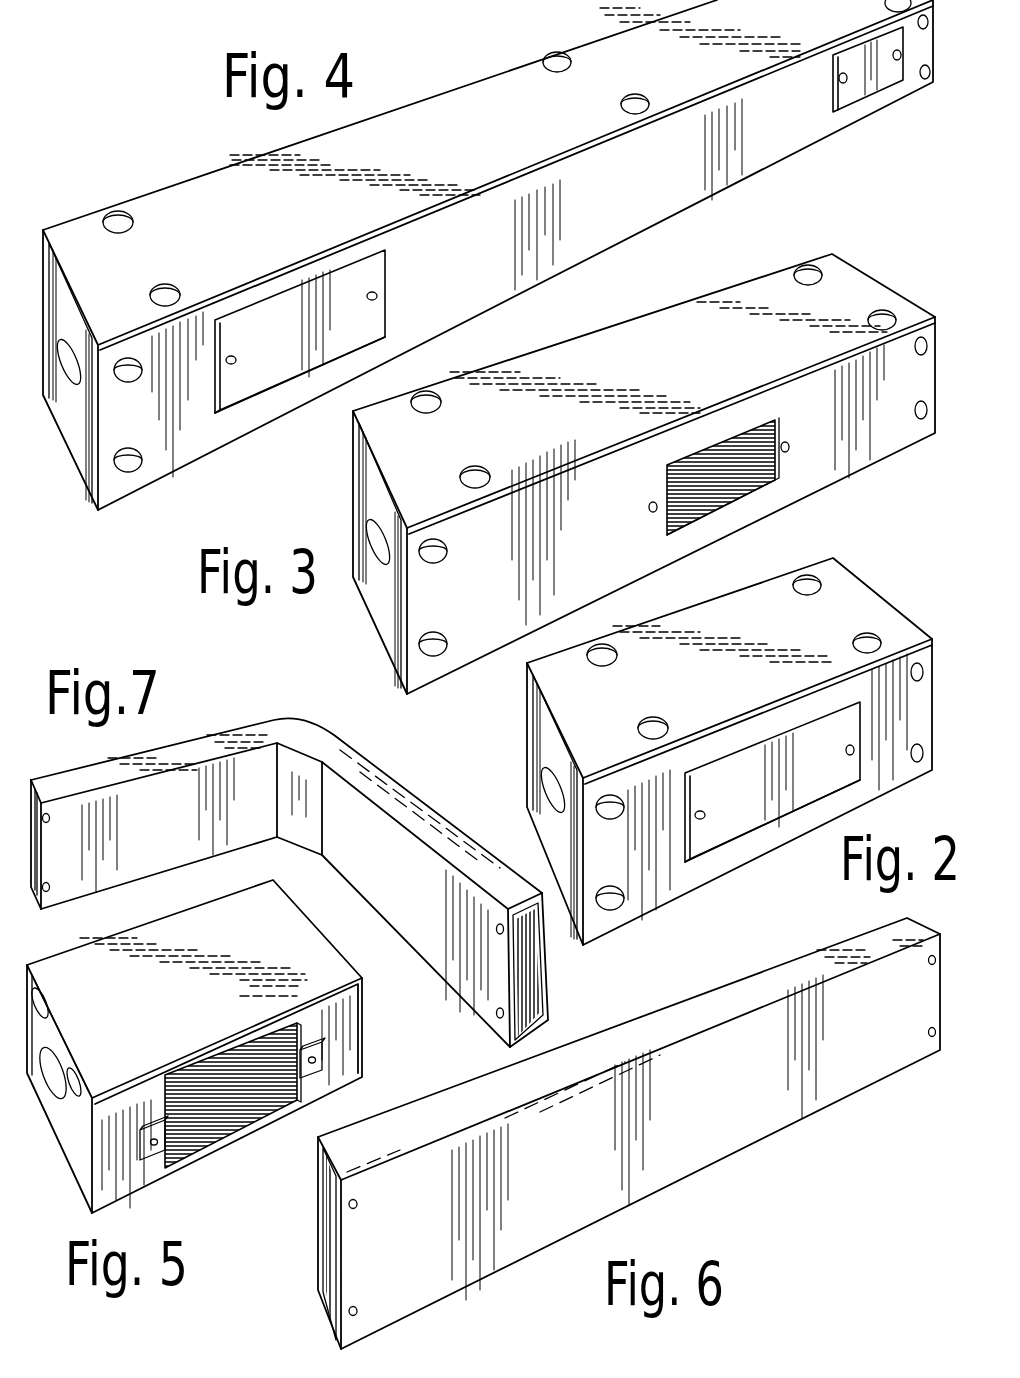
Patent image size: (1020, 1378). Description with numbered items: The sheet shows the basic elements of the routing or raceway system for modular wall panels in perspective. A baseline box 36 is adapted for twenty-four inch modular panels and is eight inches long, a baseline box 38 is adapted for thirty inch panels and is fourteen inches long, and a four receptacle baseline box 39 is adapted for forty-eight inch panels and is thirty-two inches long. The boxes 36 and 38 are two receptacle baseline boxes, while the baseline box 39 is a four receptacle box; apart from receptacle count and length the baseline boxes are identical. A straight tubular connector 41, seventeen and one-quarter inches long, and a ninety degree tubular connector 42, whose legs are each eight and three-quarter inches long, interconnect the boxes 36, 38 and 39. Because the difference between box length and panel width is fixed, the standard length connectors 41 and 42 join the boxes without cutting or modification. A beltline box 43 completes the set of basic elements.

In FIG. 2, the baseline box 36 is at (503, 726).
In FIG. 3, the baseline box 38 is at (330, 485).
In FIG. 4, the four receptacle baseline box 39 is at (160, 170).
In FIG. 6, the straight tubular connector 41 is at (824, 1135).
In FIG. 7, the 90 degree tubular connector 42 is at (254, 703).
In FIG. 5, the beltline box 43 is at (256, 1155).